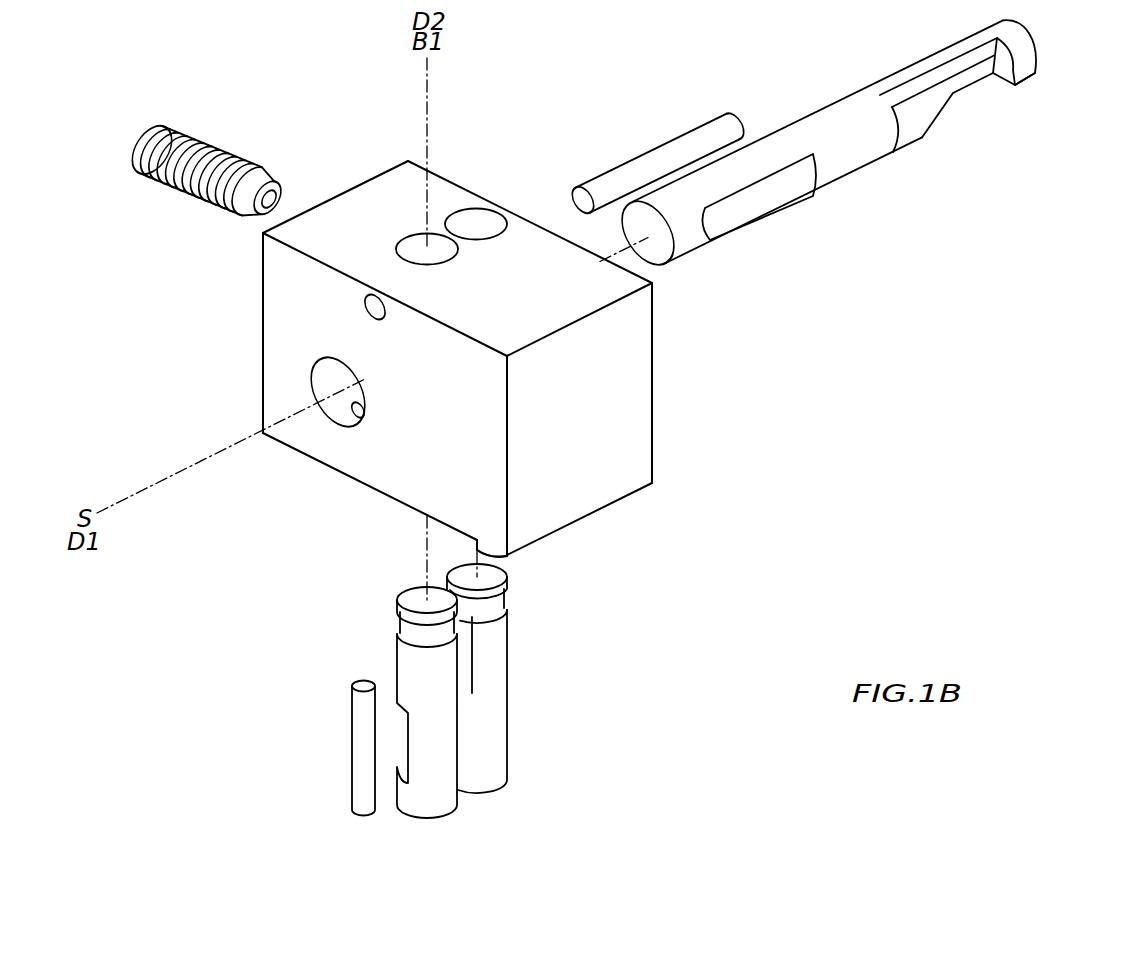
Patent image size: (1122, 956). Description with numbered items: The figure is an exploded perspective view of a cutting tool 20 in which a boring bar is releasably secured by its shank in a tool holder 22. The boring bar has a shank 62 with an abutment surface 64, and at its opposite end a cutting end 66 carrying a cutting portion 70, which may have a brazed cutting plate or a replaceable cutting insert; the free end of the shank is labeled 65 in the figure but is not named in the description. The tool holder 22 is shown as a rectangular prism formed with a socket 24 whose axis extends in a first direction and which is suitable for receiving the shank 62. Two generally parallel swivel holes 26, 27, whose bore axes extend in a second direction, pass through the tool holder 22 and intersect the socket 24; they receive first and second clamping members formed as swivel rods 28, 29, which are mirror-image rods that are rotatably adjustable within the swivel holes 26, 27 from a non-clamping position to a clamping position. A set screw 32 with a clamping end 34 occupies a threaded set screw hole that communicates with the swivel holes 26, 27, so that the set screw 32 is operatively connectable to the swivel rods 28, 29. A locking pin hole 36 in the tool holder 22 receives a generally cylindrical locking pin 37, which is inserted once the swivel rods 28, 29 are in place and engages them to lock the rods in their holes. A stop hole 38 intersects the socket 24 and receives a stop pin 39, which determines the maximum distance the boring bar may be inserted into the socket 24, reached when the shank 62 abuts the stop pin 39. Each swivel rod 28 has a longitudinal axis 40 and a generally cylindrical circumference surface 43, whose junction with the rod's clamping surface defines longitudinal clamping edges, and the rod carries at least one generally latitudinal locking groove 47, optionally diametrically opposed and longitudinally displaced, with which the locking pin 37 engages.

The cutting tool 20 is at (460, 90).
The tool holder 22 is at (468, 451).
The socket 24 is at (333, 377).
The swivel hole 26 is at (470, 218).
The swivel hole 27 is at (413, 248).
The swivel rod 28 is at (522, 650).
The swivel rod 29 is at (378, 642).
The set screw 32 is at (216, 134).
The clamping end 34 is at (283, 182).
The locking pin hole 36 is at (367, 307).
The locking pin 37 is at (667, 157).
The stop hole 38 is at (351, 412).
The stop pin 39 is at (362, 737).
The longitudinal axis 40 is at (425, 540).
The circumference surface 43 is at (410, 675).
The locking groove 47 is at (403, 622).
The shank 62 is at (860, 173).
The abutment surface 64 is at (768, 197).
The shank end face 65 is at (658, 254).
The cutting end 66 is at (1035, 60).
The cutting portion 70 is at (1023, 78).